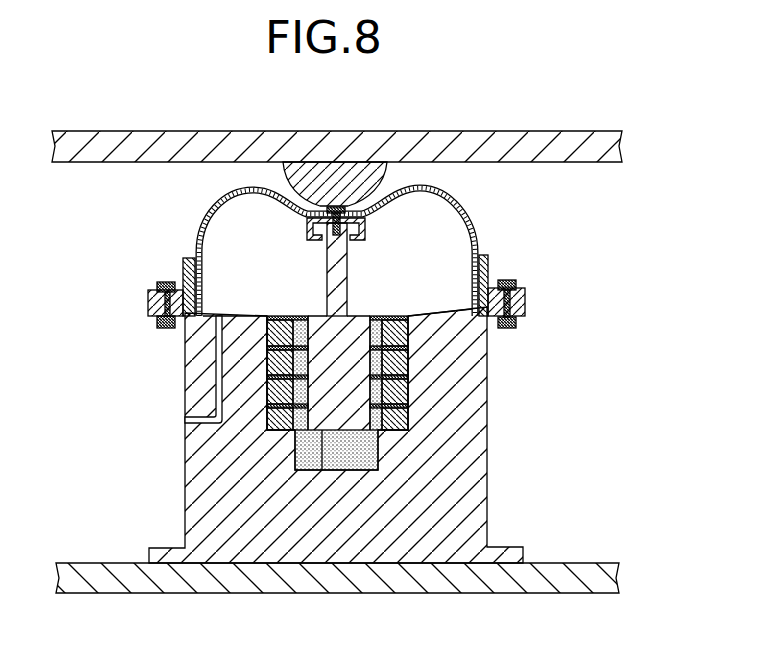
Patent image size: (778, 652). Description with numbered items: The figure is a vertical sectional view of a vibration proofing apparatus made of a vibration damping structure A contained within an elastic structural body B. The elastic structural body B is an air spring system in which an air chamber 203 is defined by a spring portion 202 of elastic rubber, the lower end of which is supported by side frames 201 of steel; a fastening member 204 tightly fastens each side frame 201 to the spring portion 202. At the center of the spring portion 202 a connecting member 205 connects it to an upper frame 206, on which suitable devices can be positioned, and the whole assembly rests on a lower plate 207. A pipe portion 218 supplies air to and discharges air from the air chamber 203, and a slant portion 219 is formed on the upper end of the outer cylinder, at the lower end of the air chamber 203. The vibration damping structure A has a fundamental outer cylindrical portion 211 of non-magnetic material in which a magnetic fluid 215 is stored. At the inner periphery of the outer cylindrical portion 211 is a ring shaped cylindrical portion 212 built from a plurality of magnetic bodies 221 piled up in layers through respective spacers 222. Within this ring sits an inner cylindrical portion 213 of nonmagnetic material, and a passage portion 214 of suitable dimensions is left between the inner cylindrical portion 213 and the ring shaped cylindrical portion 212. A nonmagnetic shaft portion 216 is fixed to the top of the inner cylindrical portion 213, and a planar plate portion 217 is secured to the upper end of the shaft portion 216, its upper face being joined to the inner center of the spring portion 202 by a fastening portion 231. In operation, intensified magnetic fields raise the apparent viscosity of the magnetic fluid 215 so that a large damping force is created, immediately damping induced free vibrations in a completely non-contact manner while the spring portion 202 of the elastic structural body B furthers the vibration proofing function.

The side frame 201 is at (150, 300).
The spring portion 202 is at (220, 207).
The air chamber 203 is at (278, 249).
The fastening member 204 is at (508, 283).
The connecting member 205 is at (370, 166).
The upper frame 206 is at (600, 152).
The lower structure 207 is at (597, 568).
The fundamental outer cylindrical portion 211 is at (488, 482).
The ring shaped cylindrical portion 212 is at (267, 425).
The inner cylindrical portion 213 is at (322, 468).
The passage portion 214 is at (297, 316).
The magnetic fluid 215 is at (362, 455).
The shaft portion 216 is at (347, 259).
The planar plate portion 217 is at (365, 226).
The pipe portion 218 is at (216, 384).
The slant portion 219 is at (238, 313).
The magnetic body 221 is at (268, 433).
The spacer 222 is at (407, 405).
The fastening portion 231 is at (333, 205).
The vibration damping structure A is at (341, 410).
The elastic structural body B is at (329, 228).